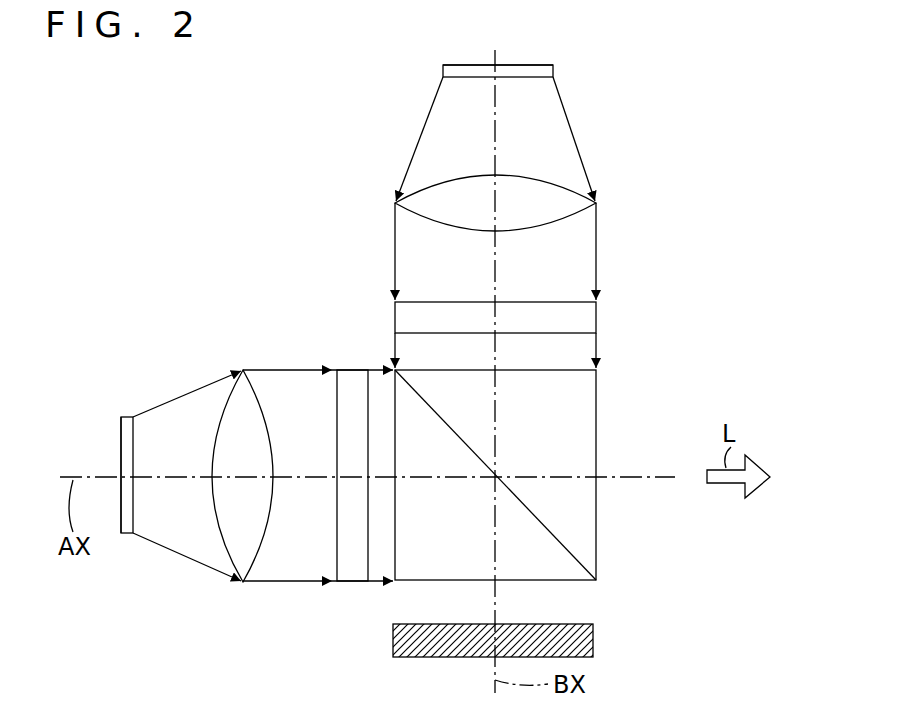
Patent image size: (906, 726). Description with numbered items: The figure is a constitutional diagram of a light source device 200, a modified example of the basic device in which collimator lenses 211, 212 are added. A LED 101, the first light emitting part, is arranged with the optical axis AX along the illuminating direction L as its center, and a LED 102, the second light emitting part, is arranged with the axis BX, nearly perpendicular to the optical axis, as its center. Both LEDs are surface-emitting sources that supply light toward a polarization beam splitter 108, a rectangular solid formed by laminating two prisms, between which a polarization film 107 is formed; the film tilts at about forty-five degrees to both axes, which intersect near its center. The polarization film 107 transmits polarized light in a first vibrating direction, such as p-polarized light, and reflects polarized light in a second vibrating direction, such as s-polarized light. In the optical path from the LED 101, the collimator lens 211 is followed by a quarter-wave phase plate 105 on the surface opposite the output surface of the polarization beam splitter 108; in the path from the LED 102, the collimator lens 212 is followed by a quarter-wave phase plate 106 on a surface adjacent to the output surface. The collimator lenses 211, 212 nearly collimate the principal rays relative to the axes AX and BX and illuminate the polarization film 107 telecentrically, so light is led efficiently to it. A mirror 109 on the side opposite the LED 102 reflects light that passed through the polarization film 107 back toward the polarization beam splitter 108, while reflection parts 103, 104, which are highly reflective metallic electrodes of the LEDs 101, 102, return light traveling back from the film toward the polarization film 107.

The LED 101 is at (125, 413).
The LED 102 is at (553, 71).
The reflection part 103 is at (123, 507).
The reflection part 104 is at (483, 65).
The λ/4 phase plate 105 is at (352, 368).
The λ/4 phase plate 106 is at (596, 318).
The polarization film 107 is at (573, 556).
The polarization beam splitter 108 is at (596, 398).
The mirror 109 is at (593, 640).
The light source device 200 is at (750, 182).
The collimator lens 211 is at (243, 368).
The collimator lens 212 is at (395, 204).